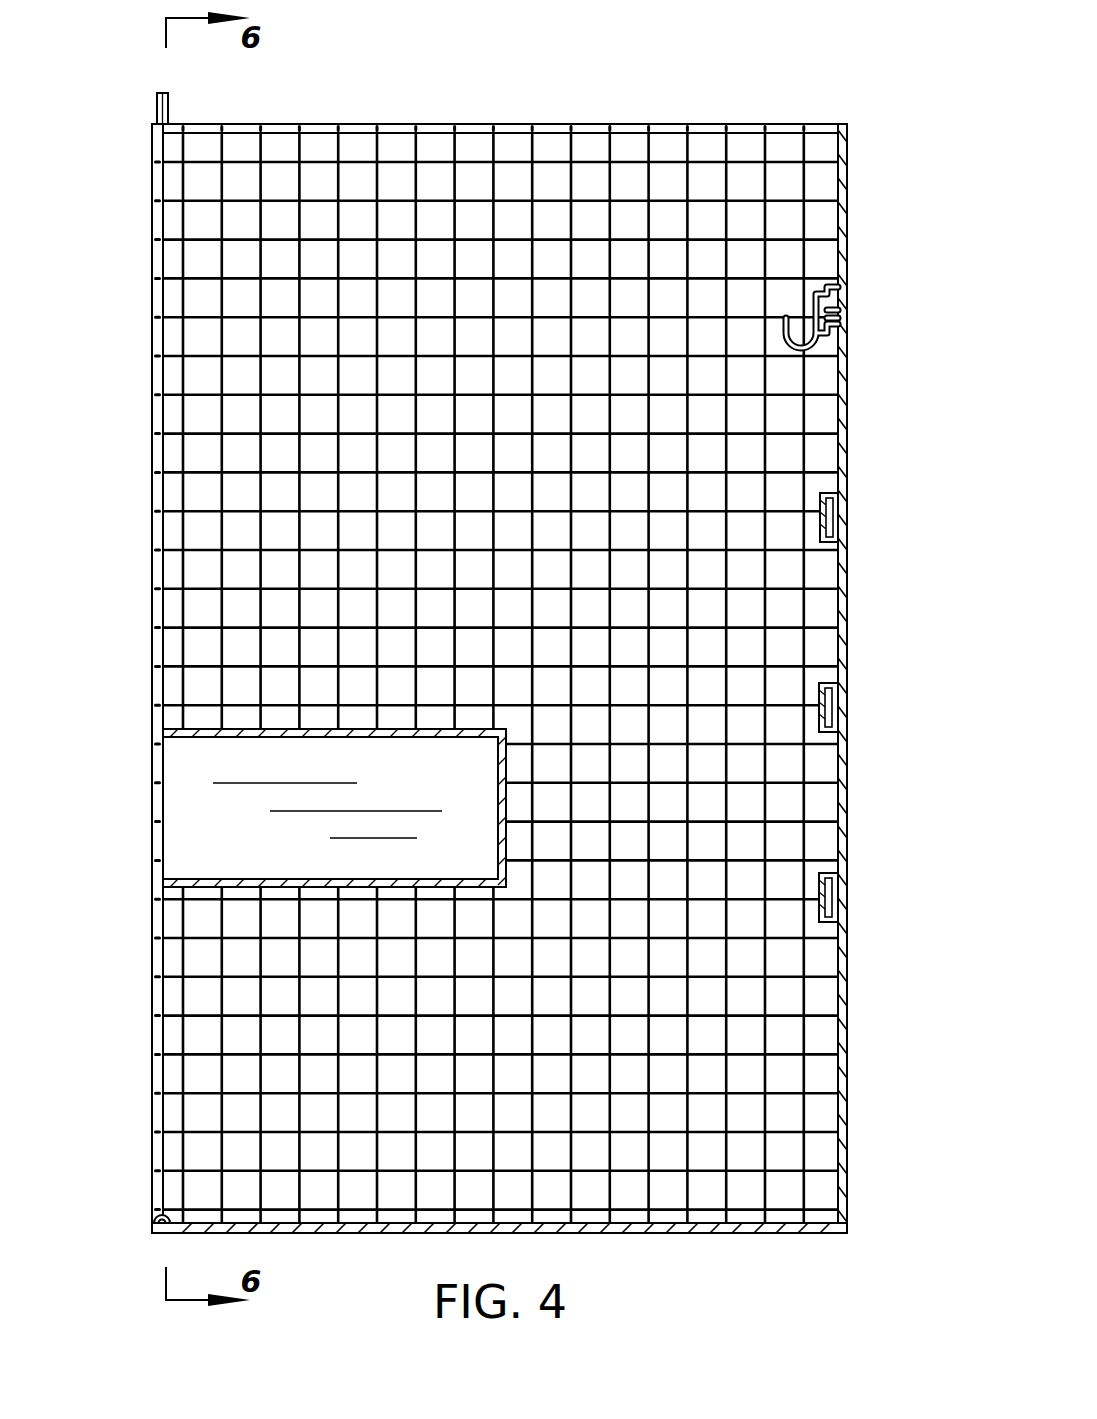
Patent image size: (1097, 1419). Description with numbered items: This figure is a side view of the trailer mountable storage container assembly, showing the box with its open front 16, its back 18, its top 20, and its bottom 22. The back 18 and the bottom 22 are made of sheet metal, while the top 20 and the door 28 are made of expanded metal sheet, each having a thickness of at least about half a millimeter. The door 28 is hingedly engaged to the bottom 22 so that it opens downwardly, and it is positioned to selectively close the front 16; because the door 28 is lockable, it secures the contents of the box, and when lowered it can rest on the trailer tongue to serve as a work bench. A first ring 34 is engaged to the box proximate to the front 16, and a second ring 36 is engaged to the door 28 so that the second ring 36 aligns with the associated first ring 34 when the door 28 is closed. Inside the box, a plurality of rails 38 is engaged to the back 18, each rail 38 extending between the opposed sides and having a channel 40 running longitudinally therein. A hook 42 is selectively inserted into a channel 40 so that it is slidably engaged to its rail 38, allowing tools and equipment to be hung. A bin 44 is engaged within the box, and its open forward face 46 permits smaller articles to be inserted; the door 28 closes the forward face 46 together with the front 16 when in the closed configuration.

The front 16 is at (158, 412).
The back 18 is at (847, 1057).
The top 20 is at (668, 124).
The bottom 22 is at (718, 1233).
The door 28 is at (152, 960).
The first ring 34 is at (170, 107).
The second ring 36 is at (155, 106).
The rail 38 is at (835, 870).
The channel 40 is at (838, 510).
The hook 42 is at (812, 343).
The bin 44 is at (247, 730).
The forward face 46 is at (160, 806).